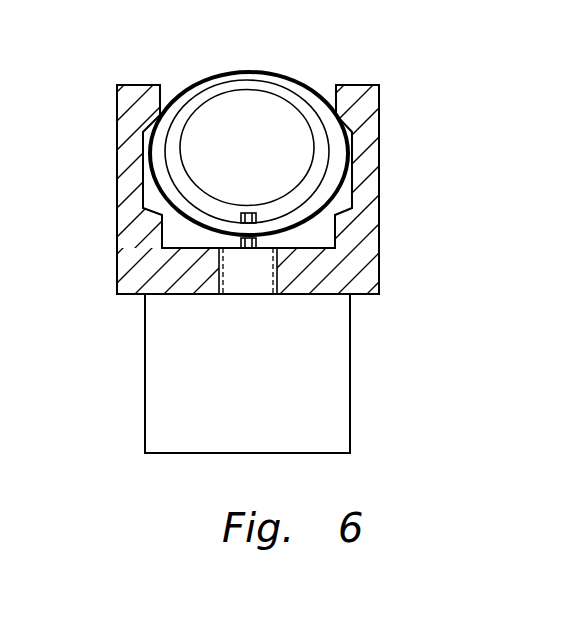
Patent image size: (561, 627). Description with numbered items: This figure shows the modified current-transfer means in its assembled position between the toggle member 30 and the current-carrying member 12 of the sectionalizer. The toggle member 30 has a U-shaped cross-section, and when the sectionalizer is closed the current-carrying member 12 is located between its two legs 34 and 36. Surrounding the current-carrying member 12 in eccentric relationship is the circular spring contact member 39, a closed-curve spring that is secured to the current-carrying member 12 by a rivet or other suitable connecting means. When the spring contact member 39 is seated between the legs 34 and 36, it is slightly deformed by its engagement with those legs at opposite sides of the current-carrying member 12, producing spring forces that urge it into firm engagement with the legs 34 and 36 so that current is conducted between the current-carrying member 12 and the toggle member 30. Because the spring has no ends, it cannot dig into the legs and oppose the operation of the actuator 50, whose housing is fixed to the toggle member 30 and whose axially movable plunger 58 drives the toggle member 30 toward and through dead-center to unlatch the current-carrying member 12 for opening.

The current-carrying member 12 is at (270, 175).
The toggle member 30 is at (125, 282).
The leg of toggle member 34 is at (128, 203).
The leg of toggle member 36 is at (372, 167).
The spring contact member 39 is at (287, 80).
The actuator 50 is at (272, 388).
The plunger 58 is at (253, 285).